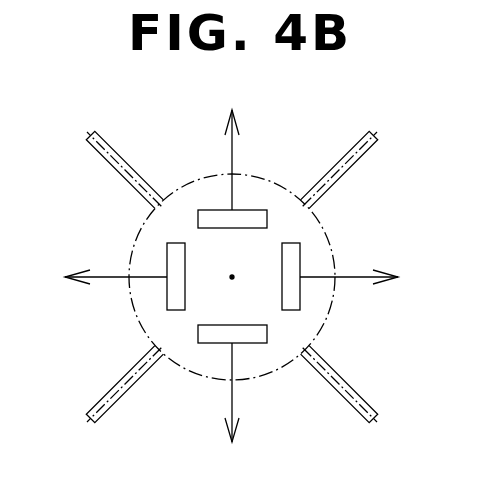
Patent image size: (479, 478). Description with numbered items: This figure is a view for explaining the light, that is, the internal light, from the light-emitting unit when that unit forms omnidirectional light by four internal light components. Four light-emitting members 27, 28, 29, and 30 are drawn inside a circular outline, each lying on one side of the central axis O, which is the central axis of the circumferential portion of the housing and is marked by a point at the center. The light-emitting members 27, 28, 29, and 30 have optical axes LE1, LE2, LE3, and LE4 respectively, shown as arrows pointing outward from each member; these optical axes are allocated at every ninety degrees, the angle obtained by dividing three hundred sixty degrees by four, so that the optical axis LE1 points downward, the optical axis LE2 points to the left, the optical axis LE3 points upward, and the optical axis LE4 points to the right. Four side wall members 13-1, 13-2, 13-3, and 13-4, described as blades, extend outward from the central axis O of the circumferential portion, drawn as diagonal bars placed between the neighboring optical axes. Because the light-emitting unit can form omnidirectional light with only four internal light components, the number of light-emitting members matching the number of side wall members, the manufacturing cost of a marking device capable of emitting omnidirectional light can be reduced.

The central axis O is at (234, 279).
The light-emitting member 27 is at (250, 343).
The light-emitting member 28 is at (167, 292).
The light-emitting member 29 is at (208, 210).
The light-emitting member 30 is at (300, 260).
The optical axis LE1 is at (230, 398).
The optical axis LE2 is at (113, 275).
The optical axis LE3 is at (236, 152).
The optical axis LE4 is at (357, 280).
The side wall member 13-1 is at (336, 386).
The side wall member 13-2 is at (116, 378).
The side wall member 13-3 is at (110, 148).
The side wall member 13-4 is at (352, 160).